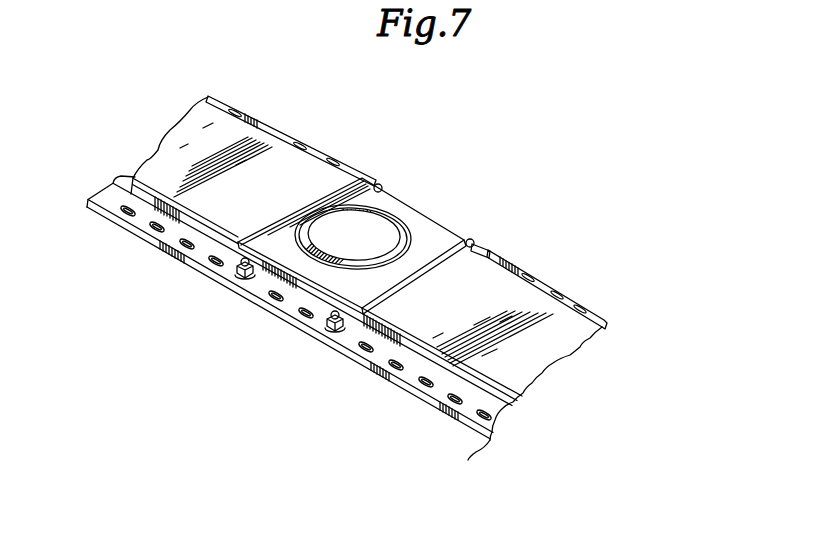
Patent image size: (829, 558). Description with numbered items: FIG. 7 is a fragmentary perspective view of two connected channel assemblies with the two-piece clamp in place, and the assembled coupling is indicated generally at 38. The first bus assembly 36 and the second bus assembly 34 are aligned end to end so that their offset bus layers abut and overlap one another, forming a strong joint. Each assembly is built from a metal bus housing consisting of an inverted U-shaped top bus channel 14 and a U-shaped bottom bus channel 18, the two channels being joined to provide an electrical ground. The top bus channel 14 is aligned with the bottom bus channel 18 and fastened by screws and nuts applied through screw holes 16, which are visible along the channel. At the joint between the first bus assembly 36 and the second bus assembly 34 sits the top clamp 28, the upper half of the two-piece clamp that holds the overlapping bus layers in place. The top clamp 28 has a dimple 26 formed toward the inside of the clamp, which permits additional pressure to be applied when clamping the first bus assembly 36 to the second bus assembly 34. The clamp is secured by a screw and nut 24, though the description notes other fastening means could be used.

The top bus channel 14 is at (275, 173).
The screw holes 16 is at (447, 393).
The bottom bus channel 18 is at (135, 225).
The nut 24 is at (380, 185).
The dimple 26 is at (378, 238).
The top clamp 28 is at (440, 238).
The second bus assembly 34 is at (543, 270).
The first bus assembly 36 is at (244, 102).
The assembly 38 is at (474, 188).